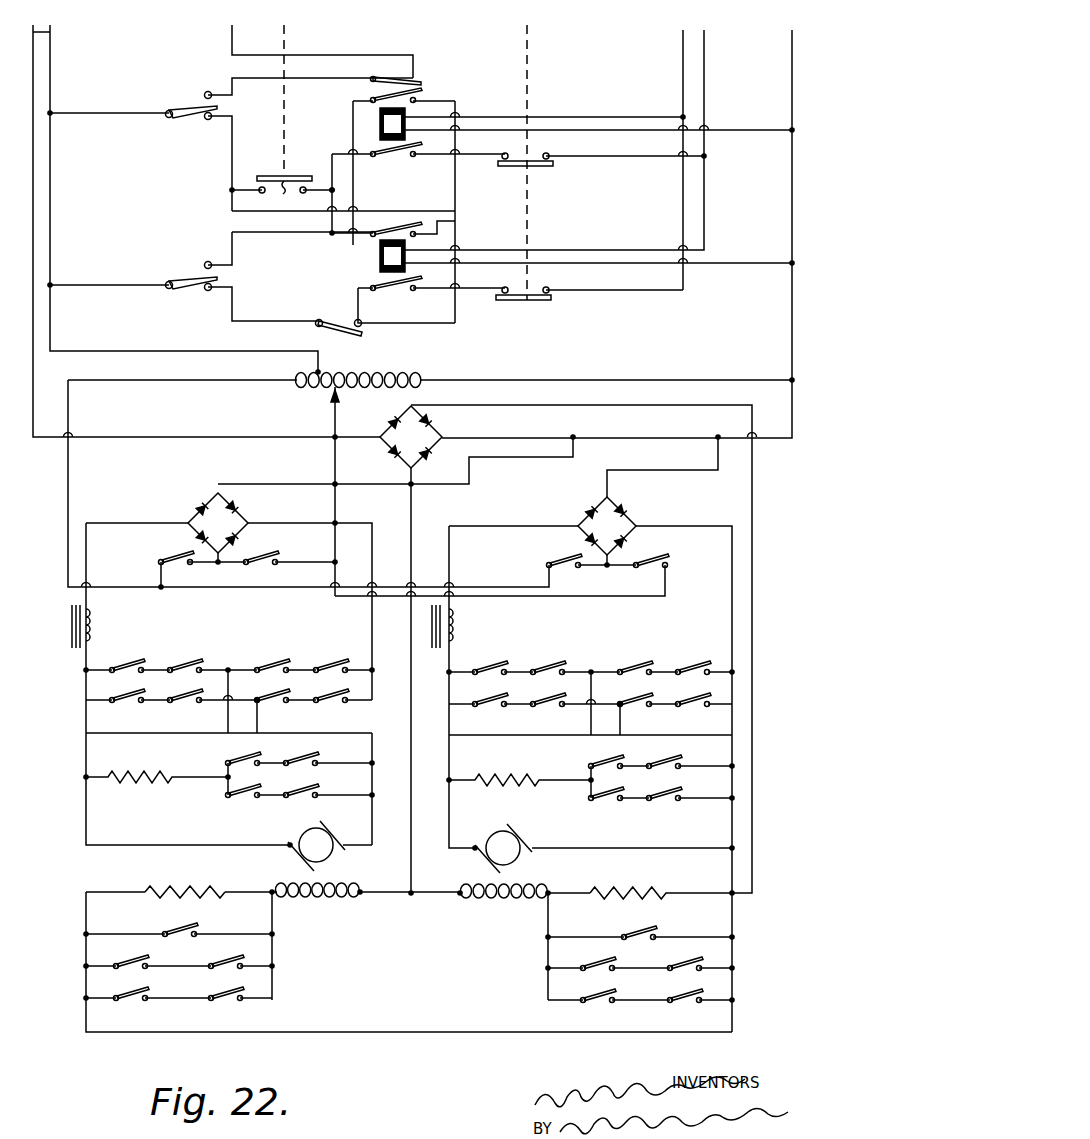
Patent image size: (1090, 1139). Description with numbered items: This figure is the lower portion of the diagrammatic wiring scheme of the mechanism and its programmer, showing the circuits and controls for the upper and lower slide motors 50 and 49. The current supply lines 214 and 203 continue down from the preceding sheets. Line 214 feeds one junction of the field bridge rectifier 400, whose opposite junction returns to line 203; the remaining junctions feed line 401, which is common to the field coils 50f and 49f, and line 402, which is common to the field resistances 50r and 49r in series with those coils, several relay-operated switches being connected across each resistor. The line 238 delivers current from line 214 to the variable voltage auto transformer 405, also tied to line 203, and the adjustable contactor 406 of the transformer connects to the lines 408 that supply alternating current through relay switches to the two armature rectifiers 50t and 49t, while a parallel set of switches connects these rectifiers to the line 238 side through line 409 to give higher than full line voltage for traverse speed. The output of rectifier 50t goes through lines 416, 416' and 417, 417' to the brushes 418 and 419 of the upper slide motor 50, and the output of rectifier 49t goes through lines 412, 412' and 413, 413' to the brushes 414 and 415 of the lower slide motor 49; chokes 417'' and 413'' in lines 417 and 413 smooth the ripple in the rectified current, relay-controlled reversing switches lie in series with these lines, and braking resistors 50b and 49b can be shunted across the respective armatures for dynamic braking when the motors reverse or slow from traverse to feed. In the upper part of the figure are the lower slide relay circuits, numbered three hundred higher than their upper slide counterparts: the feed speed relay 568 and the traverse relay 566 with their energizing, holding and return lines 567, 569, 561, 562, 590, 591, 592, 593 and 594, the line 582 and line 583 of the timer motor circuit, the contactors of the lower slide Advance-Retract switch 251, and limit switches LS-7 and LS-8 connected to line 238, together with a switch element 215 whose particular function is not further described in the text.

The power supply conductor 214 is at (52, 32).
The conductor 238 is at (55, 48).
The conductor 583 is at (230, 46).
The cam shaft (dashed) 215 is at (286, 32).
The limit switch LS-8 is at (182, 112).
The limit switch LS-7 is at (182, 280).
The conductor 582 is at (292, 85).
The relay coil 568 is at (380, 124).
The relay coil 566 is at (380, 260).
The conductor 592 is at (230, 162).
The conductor 591 is at (458, 176).
The conductor 590 is at (240, 238).
The conductor 593 is at (314, 306).
The conductor 594 is at (466, 110).
The cam shaft (dashed) 251 is at (530, 32).
The conductor 567 is at (679, 54).
The conductor 561 is at (708, 62).
The conductor 569 is at (592, 138).
The conductor 562 is at (762, 260).
The conductor 203 is at (784, 50).
The transformer winding 405 is at (386, 370).
The center tap conductor 406 is at (330, 398).
The conductor 402 is at (582, 408).
The rectifier bridge 400 is at (452, 426).
The conductor 408 is at (338, 450).
The conductor 409 is at (60, 526).
The rectifier bridge 50t is at (198, 494).
The rectifier bridge 49t is at (590, 498).
The conductor 401 is at (414, 498).
The conductor 416 is at (315, 596).
The conductor 416' is at (385, 777).
The conductor 417 is at (137, 581).
The inductance coil 417'' is at (115, 625).
The conductor 417' is at (197, 756).
The conductor 413 is at (513, 583).
The inductance coil 413'' is at (477, 625).
The conductor 413' is at (569, 758).
The conductor 412 is at (685, 697).
The conductor 412' is at (764, 885).
The resistor 50b is at (128, 785).
The resistor 49b is at (498, 775).
The motor 50 is at (296, 832).
The motor brush 418 is at (345, 818).
The motor brush 419 is at (298, 864).
The motor 49 is at (492, 830).
The motor brush 414 is at (524, 830).
The motor brush 415 is at (482, 870).
The resistor 50r is at (173, 890).
The resistor 49r is at (630, 897).
The motor field winding 50f is at (338, 903).
The motor field winding 49f is at (470, 903).